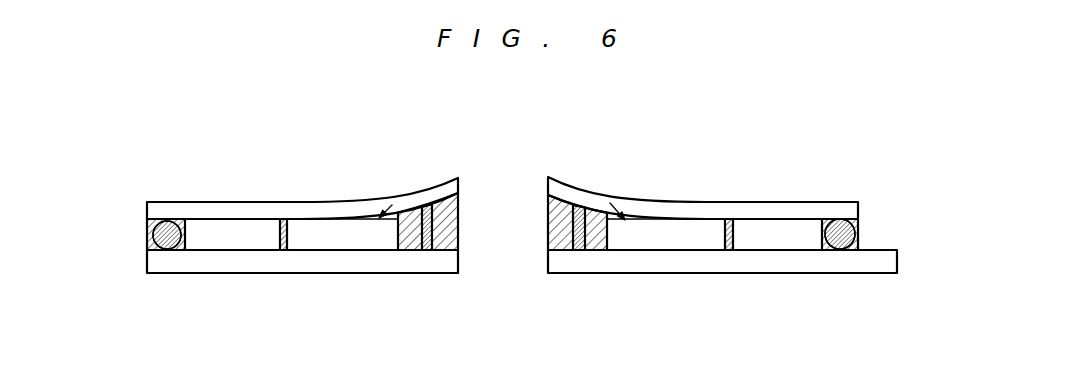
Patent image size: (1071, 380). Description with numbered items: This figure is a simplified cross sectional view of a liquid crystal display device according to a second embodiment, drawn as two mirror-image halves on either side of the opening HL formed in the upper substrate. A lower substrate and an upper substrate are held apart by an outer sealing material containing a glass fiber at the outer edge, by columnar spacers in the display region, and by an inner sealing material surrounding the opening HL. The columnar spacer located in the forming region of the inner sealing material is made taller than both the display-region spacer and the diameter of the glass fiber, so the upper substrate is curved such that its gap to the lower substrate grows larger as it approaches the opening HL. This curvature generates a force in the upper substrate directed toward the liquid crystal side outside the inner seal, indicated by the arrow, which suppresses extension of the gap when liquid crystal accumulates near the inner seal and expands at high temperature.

The opening HL is at (503, 229).